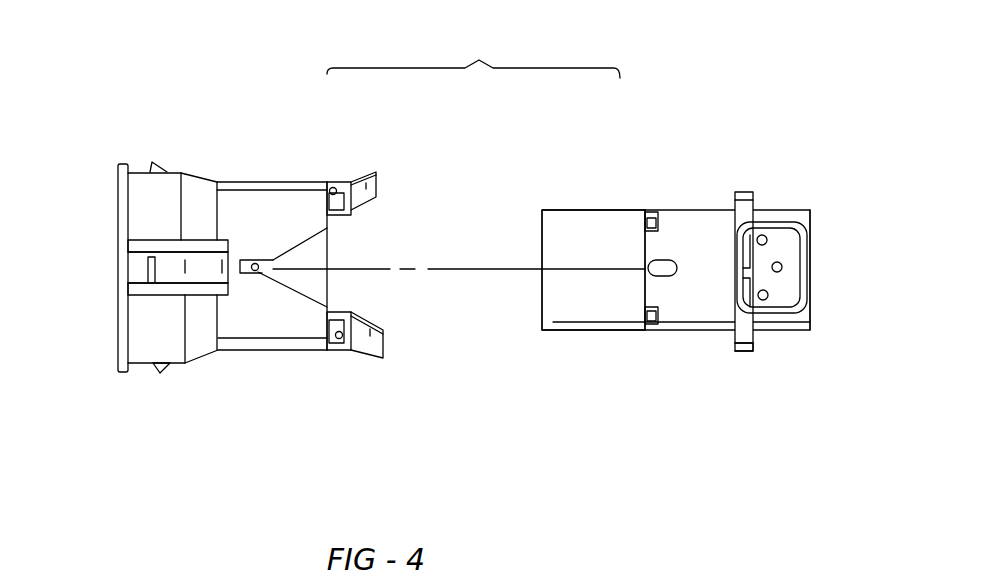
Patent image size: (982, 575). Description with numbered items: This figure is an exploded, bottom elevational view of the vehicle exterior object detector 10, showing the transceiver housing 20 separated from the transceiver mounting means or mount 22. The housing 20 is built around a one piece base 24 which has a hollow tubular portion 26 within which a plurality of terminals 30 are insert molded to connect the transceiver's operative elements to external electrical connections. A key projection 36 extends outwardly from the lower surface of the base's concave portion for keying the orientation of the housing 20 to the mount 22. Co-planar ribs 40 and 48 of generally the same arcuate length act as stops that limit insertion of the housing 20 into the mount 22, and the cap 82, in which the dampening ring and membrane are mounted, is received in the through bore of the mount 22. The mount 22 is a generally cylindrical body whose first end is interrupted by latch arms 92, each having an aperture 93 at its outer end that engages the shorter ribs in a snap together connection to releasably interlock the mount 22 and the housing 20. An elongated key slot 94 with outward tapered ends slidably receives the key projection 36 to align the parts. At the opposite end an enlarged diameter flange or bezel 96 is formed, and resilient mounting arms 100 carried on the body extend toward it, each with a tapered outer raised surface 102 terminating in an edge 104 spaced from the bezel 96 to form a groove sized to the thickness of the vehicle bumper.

The vehicle exterior object detector 10 is at (473, 50).
The transceiver housing 20 is at (665, 209).
The transceiver mounting means or mount 22 is at (222, 174).
The one piece base 24 is at (811, 295).
The hollow tubular portion 26 is at (808, 257).
The terminals 30 is at (779, 263).
The key projection 36 is at (672, 278).
The rib 40 is at (748, 351).
The rib 48 is at (742, 191).
The cap 82 is at (565, 312).
The latch arms 92 is at (363, 172).
The aperture 93 is at (333, 187).
The key slot 94 is at (256, 271).
The flange or bezel 96 is at (123, 348).
The mounting arms 100 is at (141, 272).
The tapered outer raised surface 102 is at (160, 255).
The edge 104 is at (148, 264).